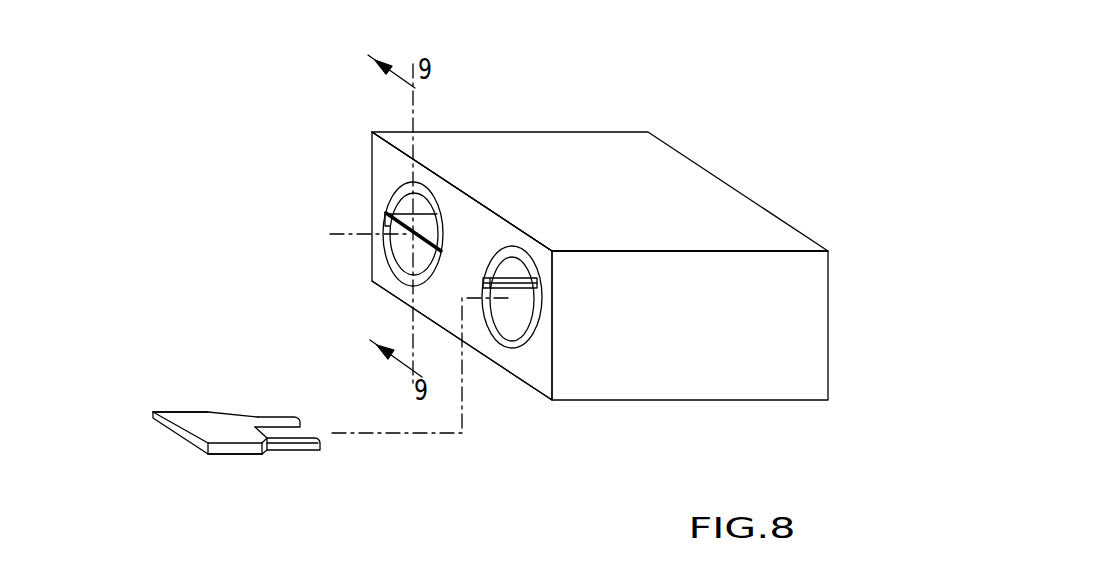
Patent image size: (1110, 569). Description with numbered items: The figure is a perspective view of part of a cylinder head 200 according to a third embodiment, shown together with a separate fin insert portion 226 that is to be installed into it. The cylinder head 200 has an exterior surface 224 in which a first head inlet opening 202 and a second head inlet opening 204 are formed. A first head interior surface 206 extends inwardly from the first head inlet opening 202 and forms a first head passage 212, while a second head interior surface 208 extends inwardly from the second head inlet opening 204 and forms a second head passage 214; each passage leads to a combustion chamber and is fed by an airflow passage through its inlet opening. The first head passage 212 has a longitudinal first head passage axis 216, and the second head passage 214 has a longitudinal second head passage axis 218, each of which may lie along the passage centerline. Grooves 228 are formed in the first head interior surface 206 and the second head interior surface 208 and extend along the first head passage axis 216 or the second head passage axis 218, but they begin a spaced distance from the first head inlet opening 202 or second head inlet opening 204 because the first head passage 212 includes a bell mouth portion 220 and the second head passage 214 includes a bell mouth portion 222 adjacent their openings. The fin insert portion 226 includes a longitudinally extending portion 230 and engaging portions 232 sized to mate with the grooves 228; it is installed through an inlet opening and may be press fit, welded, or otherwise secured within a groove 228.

The cylinder head 200 is at (647, 100).
The first head inlet opening 202 is at (392, 204).
The second head inlet opening 204 is at (507, 255).
The first head interior surface 206 is at (418, 267).
The second head interior surface 208 is at (533, 322).
The first head passage 212 is at (392, 253).
The second head passage 214 is at (512, 322).
The first head passage axis 216 is at (337, 230).
The second head passage axis 218 is at (471, 297).
The bell mouth portion 220 is at (404, 188).
The bell mouth portion 222 is at (508, 283).
The exterior surface 224 is at (540, 376).
The fin insert portion 226 is at (174, 437).
The groove 228 is at (512, 280).
The longitudinally extending portion 230 is at (275, 418).
The engaging portion 232 is at (178, 410).